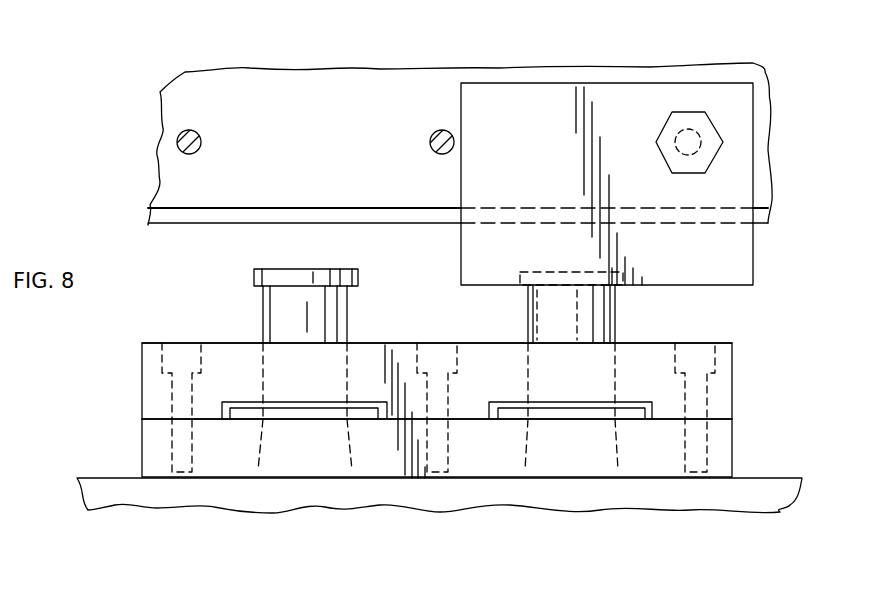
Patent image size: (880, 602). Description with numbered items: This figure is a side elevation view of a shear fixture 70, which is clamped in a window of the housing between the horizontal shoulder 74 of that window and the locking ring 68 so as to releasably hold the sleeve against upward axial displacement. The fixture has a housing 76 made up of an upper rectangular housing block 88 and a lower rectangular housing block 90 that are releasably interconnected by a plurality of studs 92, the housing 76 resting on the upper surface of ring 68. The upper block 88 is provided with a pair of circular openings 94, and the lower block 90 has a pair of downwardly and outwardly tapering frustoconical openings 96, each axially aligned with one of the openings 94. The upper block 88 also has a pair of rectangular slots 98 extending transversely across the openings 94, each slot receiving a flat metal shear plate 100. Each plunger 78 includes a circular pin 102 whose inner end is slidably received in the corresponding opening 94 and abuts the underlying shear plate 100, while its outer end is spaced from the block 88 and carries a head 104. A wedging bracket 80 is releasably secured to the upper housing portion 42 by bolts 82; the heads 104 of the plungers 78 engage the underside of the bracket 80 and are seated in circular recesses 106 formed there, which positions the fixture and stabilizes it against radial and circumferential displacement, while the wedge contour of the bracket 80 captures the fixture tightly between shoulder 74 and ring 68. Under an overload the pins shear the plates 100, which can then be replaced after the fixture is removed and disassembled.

The upper housing portion 42 is at (333, 72).
The locking ring 68 is at (472, 502).
The shear fixture 70 is at (770, 345).
The horizontal shoulder 74 is at (303, 210).
The housing 76 is at (735, 407).
The plunger 78 is at (363, 263).
The wedging bracket 80 is at (613, 100).
The bolt 82 is at (200, 137).
The upper housing block 88 is at (657, 352).
The lower housing block 90 is at (727, 453).
The stud 92 is at (173, 353).
The circular opening 94 is at (345, 368).
The frustoconical opening 96 is at (258, 465).
The rectangular slot 98 is at (247, 413).
The shear plate 100 is at (363, 417).
The circular pin 102 is at (275, 325).
The head 104 is at (279, 277).
The circular recess 106 is at (615, 272).